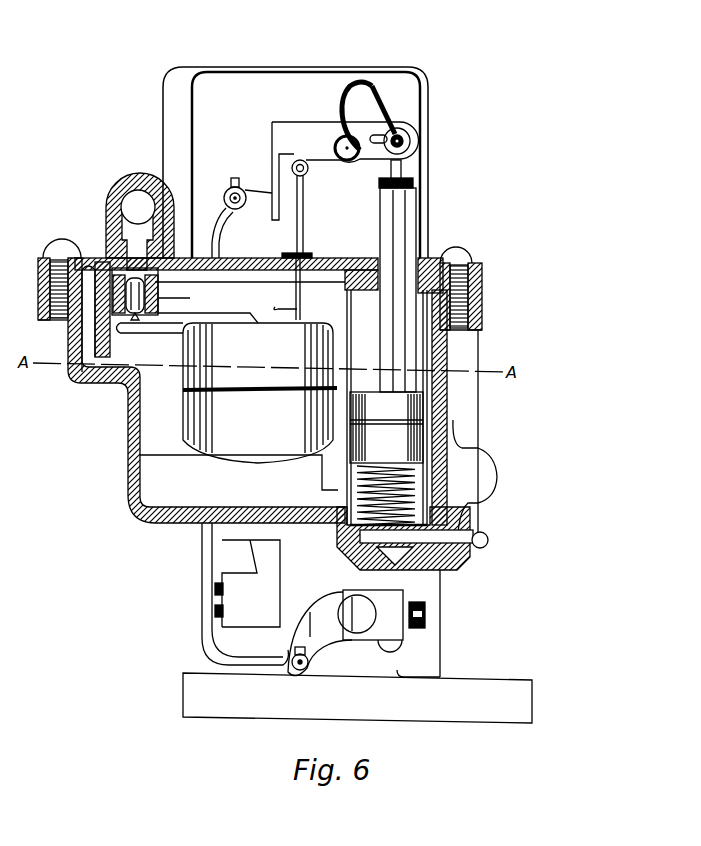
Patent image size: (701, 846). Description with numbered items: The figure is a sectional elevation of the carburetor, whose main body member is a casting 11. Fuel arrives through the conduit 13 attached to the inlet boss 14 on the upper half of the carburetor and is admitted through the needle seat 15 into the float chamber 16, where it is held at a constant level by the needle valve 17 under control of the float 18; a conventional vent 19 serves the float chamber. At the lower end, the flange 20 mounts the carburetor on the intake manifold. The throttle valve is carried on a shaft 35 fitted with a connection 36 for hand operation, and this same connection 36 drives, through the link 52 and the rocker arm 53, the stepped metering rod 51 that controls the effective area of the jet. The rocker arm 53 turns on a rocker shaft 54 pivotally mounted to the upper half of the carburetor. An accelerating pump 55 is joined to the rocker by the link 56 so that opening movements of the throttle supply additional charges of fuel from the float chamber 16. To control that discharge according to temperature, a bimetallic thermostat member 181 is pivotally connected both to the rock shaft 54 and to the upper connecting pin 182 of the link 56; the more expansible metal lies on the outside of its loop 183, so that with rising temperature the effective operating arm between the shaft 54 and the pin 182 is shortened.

The casting forming the main body member 11 is at (128, 464).
The conduit 13 is at (138, 207).
The inlet boss 14 is at (113, 192).
The needle seat 15 is at (123, 262).
The float chamber 16 is at (239, 455).
The needle valve 17 is at (142, 304).
The float 18 is at (332, 362).
The vent 19 is at (327, 262).
The flange 20 is at (497, 693).
The throttle shaft 35 is at (347, 597).
The connection 36 is at (343, 643).
The metering rod 51 is at (304, 219).
The link 52 is at (225, 232).
The rocker arm 53 is at (316, 137).
The rocker shaft 54 is at (334, 149).
The accelerating pump 55 is at (393, 410).
The link 56 is at (395, 167).
The thermostat member 181 is at (385, 130).
The upper connecting pin 182 is at (402, 134).
The loop 183 is at (353, 84).